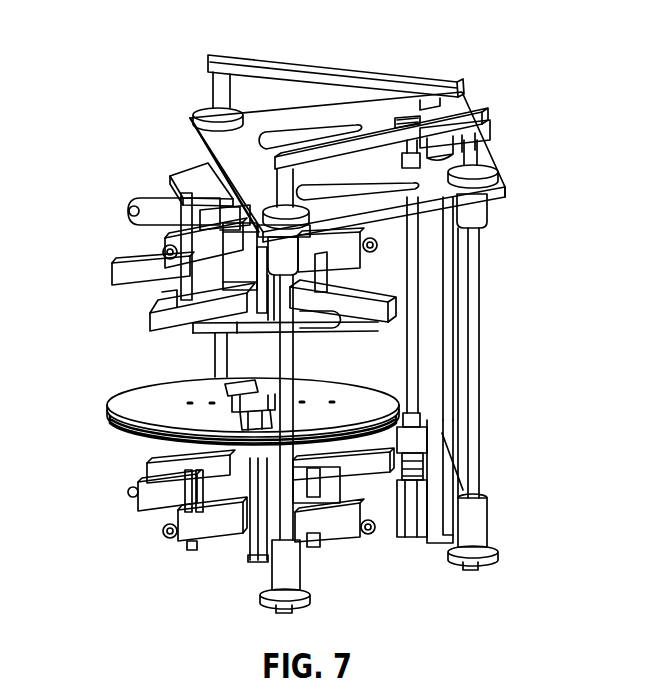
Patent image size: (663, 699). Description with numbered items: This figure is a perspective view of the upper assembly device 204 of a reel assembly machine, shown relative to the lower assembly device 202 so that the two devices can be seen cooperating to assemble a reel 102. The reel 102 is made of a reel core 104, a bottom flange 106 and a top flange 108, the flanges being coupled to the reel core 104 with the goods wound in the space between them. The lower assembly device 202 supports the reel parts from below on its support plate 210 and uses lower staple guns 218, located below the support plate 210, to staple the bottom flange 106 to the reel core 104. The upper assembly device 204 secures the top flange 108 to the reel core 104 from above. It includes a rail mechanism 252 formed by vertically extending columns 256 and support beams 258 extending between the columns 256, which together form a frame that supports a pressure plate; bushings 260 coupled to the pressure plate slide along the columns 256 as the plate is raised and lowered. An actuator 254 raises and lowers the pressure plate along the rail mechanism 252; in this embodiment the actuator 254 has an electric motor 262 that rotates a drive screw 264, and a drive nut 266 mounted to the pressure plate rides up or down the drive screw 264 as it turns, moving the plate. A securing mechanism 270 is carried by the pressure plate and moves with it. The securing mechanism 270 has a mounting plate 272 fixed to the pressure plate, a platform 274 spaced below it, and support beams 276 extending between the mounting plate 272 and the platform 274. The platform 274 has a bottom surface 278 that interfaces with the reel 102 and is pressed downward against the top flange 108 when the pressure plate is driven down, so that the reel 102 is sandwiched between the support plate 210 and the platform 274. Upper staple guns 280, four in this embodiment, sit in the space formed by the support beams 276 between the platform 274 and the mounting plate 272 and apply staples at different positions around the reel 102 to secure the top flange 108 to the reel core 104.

The reel 102 is at (152, 409).
The reel core 104 is at (233, 487).
The bottom flange 106 is at (138, 419).
The top flange 108 is at (150, 440).
The lower assembly device 202 is at (225, 565).
The upper assembly device 204 is at (535, 180).
The support plate 210 is at (232, 143).
The lower staple guns 218 is at (270, 424).
The rail mechanism 252 is at (480, 413).
The actuator 254 is at (415, 548).
The columns 256 is at (470, 300).
The support beams 258 is at (352, 72).
The bushings 260 is at (472, 214).
The electric motor 262 is at (413, 520).
The drive screw 264 is at (413, 360).
The drive nut 266 is at (410, 156).
The securing mechanism 270 is at (125, 232).
The mounting plate 272 is at (192, 178).
The platform 274 is at (213, 323).
The support beams 276 is at (185, 222).
The bottom surface 278 is at (205, 332).
The upper staple guns 280 is at (235, 268).